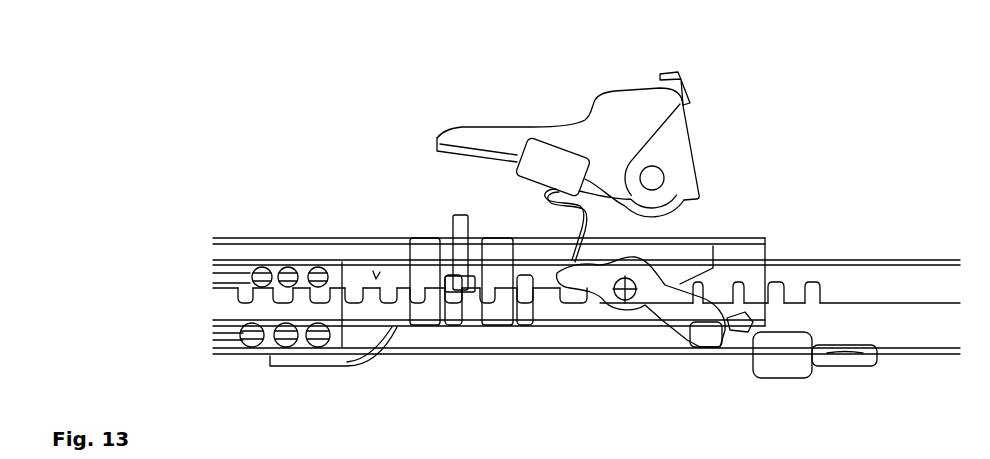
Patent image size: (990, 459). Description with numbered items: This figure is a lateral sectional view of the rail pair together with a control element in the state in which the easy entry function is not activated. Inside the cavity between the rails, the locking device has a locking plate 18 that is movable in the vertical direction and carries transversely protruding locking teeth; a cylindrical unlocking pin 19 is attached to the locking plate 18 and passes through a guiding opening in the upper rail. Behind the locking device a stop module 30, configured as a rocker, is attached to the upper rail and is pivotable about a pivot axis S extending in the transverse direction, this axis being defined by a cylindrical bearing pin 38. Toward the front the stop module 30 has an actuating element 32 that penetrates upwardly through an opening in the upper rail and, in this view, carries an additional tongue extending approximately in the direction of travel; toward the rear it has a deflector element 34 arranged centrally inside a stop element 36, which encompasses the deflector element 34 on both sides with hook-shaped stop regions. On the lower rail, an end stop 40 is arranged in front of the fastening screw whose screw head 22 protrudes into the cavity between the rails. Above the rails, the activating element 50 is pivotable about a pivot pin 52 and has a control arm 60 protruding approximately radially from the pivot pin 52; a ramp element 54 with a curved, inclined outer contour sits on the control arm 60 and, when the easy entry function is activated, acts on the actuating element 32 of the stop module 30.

The control arm 60 is at (468, 133).
The activating element 50 is at (623, 122).
The ramp element 54 is at (553, 160).
The pivot pin 52 is at (650, 178).
The actuating element 32 is at (577, 225).
The pivot axis S is at (625, 288).
The end stop 40 is at (297, 363).
The unlocking pin 19 is at (463, 222).
The locking plate 18 is at (467, 293).
The bearing pin 38 is at (620, 295).
The stop module 30 is at (667, 303).
The stop element 36 is at (708, 323).
The deflector element 34 is at (742, 323).
The screw head 22 is at (815, 355).